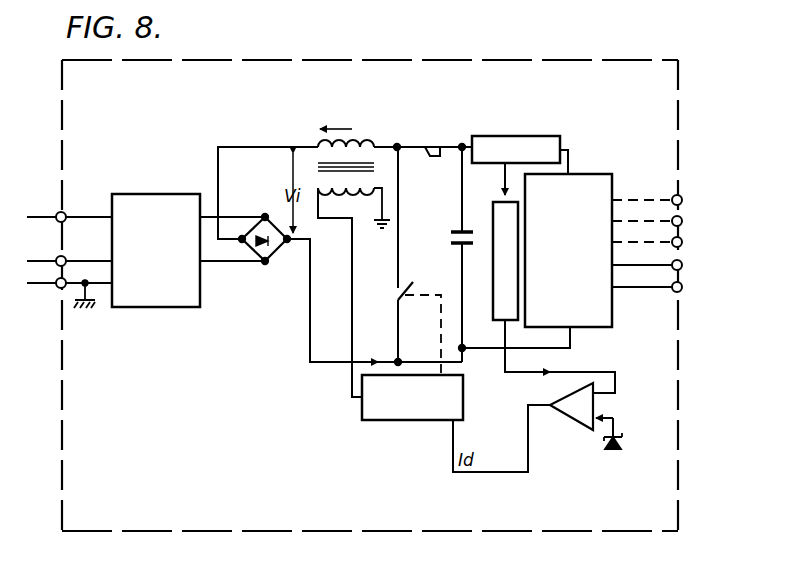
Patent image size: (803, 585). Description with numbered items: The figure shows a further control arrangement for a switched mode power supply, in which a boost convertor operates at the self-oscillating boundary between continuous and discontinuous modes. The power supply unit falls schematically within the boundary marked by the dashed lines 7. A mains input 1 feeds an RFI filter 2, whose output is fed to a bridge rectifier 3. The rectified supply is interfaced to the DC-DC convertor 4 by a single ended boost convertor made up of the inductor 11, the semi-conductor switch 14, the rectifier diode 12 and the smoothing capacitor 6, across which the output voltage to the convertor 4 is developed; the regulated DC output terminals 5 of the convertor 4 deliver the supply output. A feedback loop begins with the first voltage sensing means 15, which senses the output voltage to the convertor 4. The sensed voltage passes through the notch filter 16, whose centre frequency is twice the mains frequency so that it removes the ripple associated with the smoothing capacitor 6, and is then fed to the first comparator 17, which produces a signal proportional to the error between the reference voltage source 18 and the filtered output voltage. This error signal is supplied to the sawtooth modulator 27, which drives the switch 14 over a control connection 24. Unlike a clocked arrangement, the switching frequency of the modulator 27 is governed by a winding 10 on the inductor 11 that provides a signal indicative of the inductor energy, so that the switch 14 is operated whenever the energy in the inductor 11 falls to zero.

The mains input 1 is at (38, 204).
The RFI filter 2 is at (140, 194).
The bridge rectifier 3 is at (257, 222).
The DC-DC convertor 4 is at (580, 184).
The regulated DC output terminals 5 is at (645, 294).
The smoothing capacitor 6 is at (455, 232).
The dashed lines 7 is at (612, 518).
The transformer secondary winding 10 is at (352, 196).
The inductor 11 is at (365, 140).
The rectifier diode 12 is at (432, 155).
The semi-conductor switch 14 is at (400, 285).
The first voltage sensing means 15 is at (493, 136).
The notch filter 16 is at (493, 226).
The first comparator 17 is at (582, 412).
The reference voltage source 18 is at (616, 452).
The control line 24 is at (441, 330).
The sawtooth modulator 27 is at (463, 402).